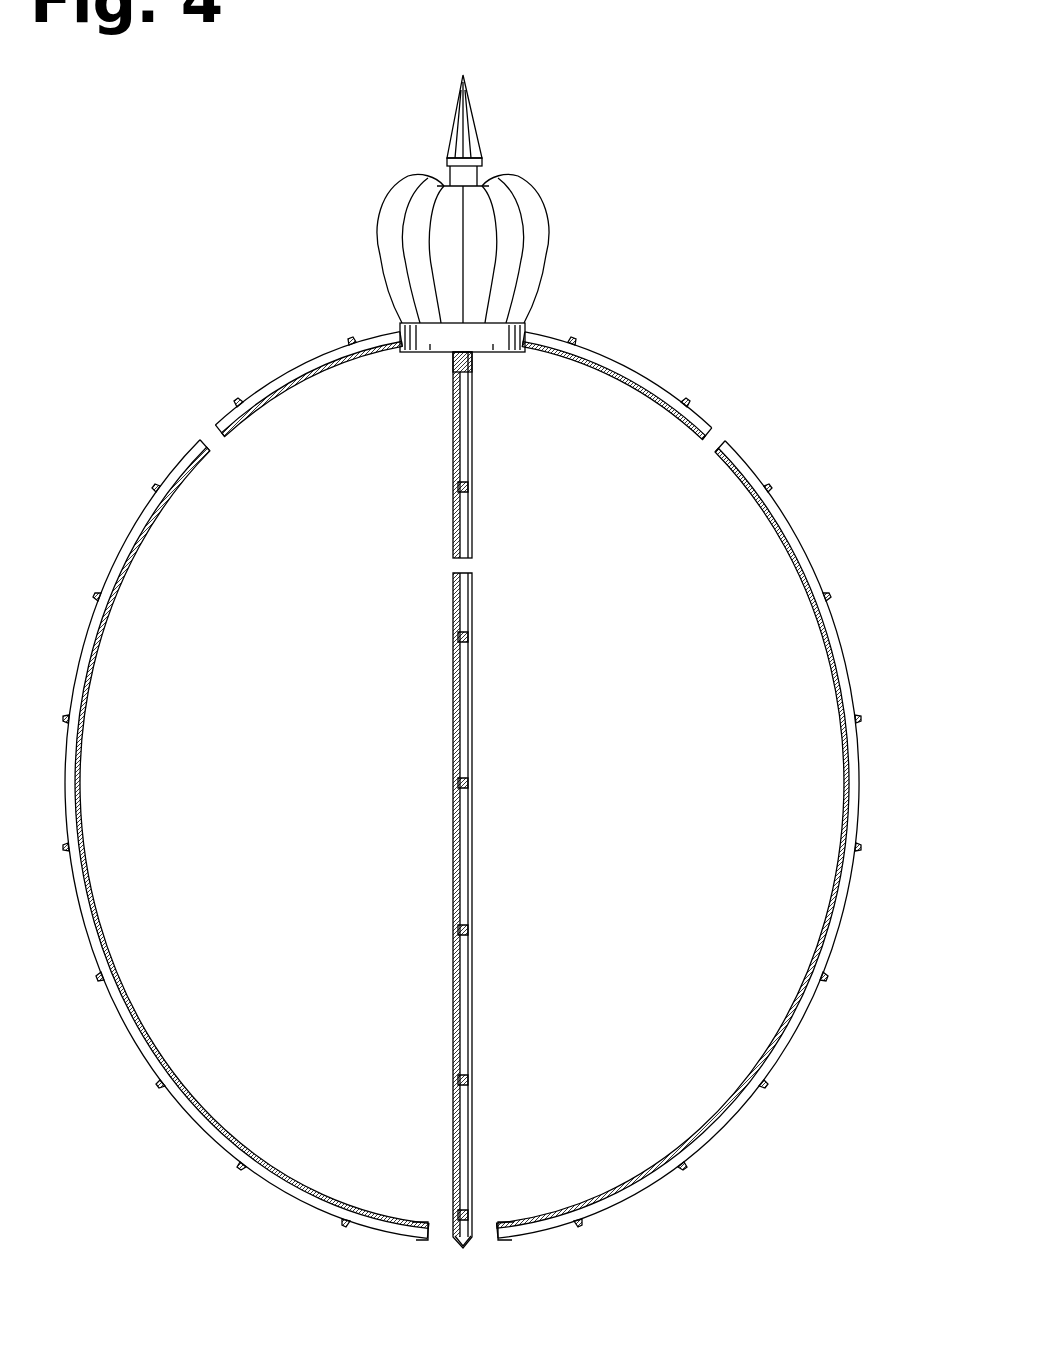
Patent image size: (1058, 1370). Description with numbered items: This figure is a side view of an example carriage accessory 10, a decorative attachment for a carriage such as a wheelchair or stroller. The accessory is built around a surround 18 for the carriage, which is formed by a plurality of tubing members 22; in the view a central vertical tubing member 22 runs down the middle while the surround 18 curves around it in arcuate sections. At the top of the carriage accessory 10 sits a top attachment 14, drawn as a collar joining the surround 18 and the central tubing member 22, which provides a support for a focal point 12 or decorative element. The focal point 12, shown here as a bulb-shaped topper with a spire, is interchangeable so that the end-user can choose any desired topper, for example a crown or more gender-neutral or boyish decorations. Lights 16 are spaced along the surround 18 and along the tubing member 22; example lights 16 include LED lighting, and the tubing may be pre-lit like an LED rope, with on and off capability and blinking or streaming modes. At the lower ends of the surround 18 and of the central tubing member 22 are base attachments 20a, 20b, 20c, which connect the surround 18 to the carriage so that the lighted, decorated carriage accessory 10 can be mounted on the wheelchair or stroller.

The carriage accessory 10 is at (832, 189).
The focal point 12 is at (396, 200).
The top attachment 14 is at (424, 357).
The lights 16 is at (240, 393).
The surround 18 is at (145, 507).
The base attachment 20a is at (415, 1232).
The base attachment 20b is at (470, 1246).
The base attachment 20c is at (503, 1212).
The tubing member 22 is at (450, 722).